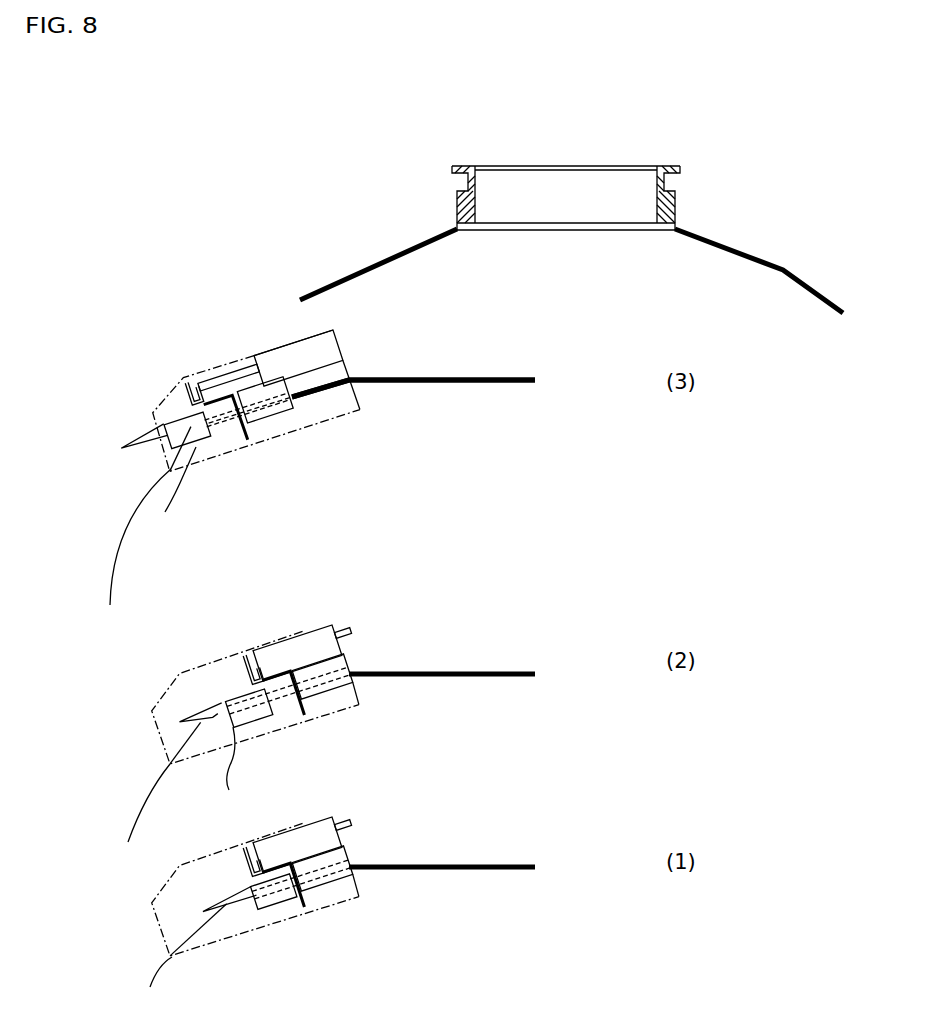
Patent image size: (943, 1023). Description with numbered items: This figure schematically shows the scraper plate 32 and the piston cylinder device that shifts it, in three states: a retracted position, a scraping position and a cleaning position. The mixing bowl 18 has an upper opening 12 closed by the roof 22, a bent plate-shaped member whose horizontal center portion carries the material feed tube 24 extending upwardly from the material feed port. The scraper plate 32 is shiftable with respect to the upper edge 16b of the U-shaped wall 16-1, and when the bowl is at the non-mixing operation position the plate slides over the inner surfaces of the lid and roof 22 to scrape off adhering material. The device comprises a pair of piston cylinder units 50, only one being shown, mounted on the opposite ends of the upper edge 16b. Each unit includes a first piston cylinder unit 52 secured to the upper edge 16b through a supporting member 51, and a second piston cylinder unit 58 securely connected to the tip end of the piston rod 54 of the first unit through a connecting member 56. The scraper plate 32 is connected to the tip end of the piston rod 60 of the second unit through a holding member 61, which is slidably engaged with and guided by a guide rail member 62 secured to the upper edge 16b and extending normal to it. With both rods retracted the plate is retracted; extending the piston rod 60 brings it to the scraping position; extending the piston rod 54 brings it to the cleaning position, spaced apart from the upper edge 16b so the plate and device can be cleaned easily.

The upper opening 12 is at (123, 561).
The U-shaped wall 16-1 is at (430, 378).
The upper edge 16b is at (307, 392).
The mixing bowl 18 is at (521, 358).
The roof 22 is at (396, 228).
The material feed tube 24 is at (668, 148).
The scraper plate 32 is at (140, 446).
The piston cylinder unit 50 is at (217, 297).
The supporting member 51 is at (316, 322).
The first piston cylinder unit 52 is at (264, 352).
The piston rod 54 is at (226, 368).
The connecting member 56 is at (190, 378).
The second piston cylinder unit 58 is at (270, 421).
The piston rod 60 is at (240, 432).
The holding member 61 is at (203, 632).
The guide rail member 62 is at (211, 727).